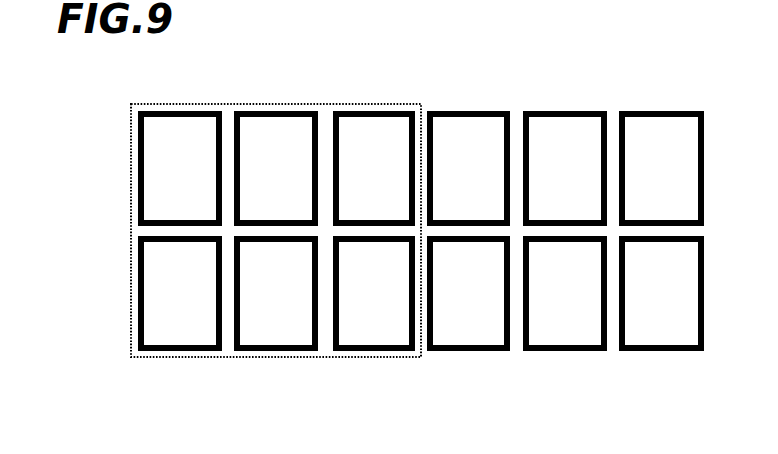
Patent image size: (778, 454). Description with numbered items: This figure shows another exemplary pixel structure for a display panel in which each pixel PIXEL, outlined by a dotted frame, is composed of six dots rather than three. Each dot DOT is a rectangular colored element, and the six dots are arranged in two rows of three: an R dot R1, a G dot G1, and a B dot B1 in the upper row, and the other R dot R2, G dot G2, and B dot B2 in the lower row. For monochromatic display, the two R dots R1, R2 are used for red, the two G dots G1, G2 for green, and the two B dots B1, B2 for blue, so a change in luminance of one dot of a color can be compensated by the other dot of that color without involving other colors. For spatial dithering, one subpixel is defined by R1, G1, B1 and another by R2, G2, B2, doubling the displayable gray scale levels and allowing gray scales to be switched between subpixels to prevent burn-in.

The pixel PIXEL is at (268, 102).
The dot DOT is at (184, 326).
The R dot R1 is at (324, 168).
The G dot G1 is at (420, 168).
The B dot B1 is at (518, 168).
The R dot R2 is at (324, 293).
The G dot G2 is at (420, 293).
The B dot B2 is at (518, 293).